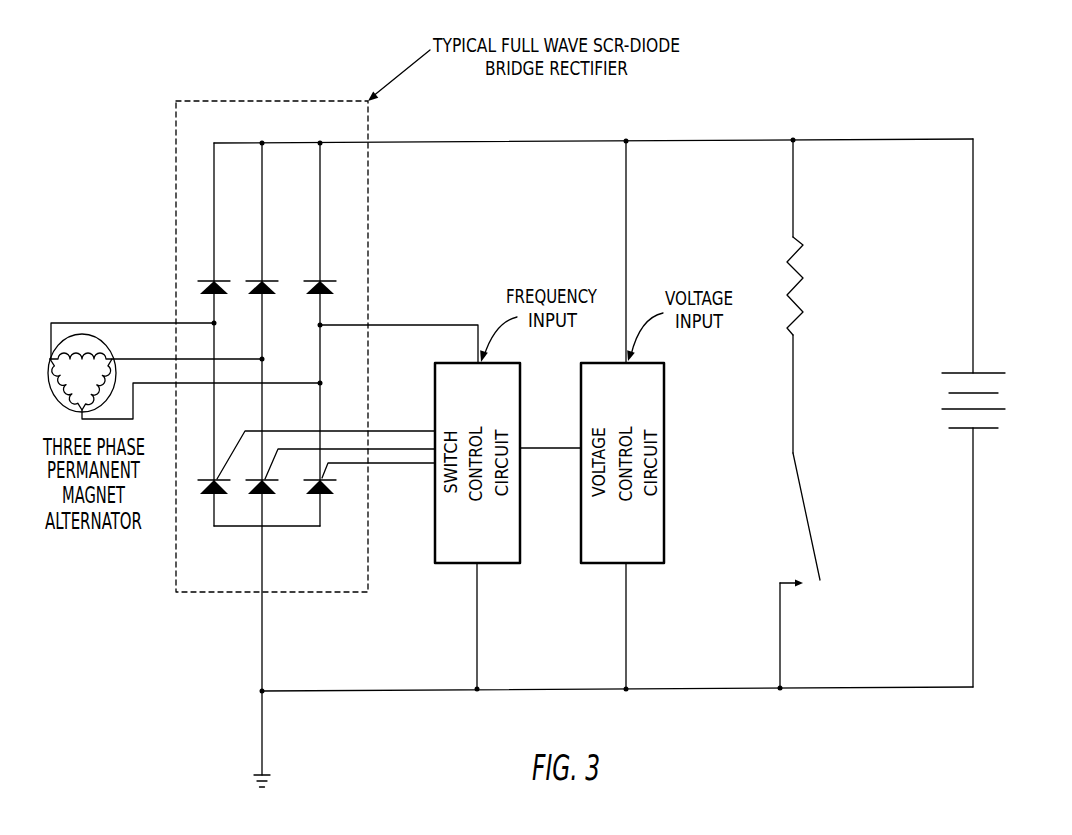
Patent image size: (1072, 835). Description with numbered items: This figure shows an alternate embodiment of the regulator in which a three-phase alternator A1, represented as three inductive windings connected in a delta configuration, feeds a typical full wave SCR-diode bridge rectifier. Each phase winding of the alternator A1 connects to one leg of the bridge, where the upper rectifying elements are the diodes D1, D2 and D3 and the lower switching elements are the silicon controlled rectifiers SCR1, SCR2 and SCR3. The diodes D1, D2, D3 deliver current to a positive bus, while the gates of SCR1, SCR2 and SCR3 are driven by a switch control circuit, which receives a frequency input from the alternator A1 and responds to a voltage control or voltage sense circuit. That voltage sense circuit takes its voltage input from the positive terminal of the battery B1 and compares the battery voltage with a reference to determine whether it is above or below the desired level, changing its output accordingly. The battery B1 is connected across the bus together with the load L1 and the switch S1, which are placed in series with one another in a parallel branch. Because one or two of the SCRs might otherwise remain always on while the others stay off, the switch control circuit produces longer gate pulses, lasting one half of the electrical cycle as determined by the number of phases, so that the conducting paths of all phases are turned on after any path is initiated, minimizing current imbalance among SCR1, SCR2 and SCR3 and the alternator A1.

The diode D1 is at (211, 274).
The diode D2 is at (266, 274).
The diode D3 is at (324, 274).
The silicon controlled rectifier SCR1 is at (311, 478).
The silicon controlled rectifier SCR2 is at (335, 487).
The silicon controlled rectifier SCR3 is at (369, 494).
The alternator A1 is at (82, 373).
The load L1 is at (810, 296).
The switch S1 is at (809, 570).
The battery B1 is at (992, 413).